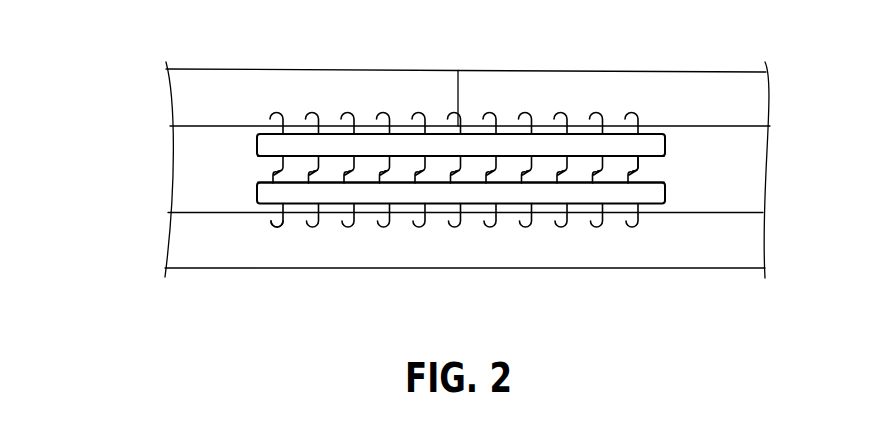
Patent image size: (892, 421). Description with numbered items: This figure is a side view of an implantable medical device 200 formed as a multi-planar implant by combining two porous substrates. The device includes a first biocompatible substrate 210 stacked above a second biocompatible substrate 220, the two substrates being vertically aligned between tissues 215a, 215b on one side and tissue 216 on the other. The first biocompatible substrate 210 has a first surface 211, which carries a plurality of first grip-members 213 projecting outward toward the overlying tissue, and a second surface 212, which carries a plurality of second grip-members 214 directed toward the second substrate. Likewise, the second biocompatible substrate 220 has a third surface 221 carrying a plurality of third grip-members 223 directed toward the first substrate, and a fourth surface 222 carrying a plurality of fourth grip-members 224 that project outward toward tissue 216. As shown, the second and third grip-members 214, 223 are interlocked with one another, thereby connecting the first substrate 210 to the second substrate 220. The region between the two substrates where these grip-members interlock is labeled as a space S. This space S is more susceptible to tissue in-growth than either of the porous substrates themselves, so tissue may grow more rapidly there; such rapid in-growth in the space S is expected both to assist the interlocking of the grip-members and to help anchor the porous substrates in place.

The implantable medical device 200 is at (757, 186).
The first biocompatible substrate 210 is at (665, 145).
The first surface 211 is at (652, 134).
The second surface 212 is at (257, 155).
The first grip-members 213 is at (632, 112).
The second grip-members 214 is at (280, 163).
The tissue 215a is at (307, 70).
The tissue 215b is at (505, 71).
The tissue 216 is at (378, 268).
The second biocompatible substrate 220 is at (257, 192).
The third surface 221 is at (640, 162).
The fourth surface 222 is at (270, 205).
The third grip-members 223 is at (640, 184).
The fourth grip-members 224 is at (278, 227).
The space S is at (407, 165).